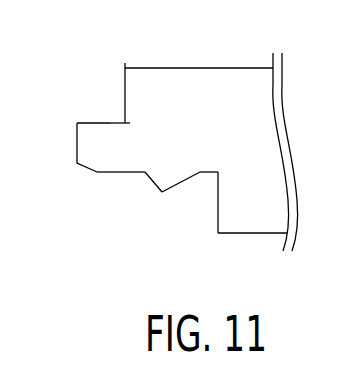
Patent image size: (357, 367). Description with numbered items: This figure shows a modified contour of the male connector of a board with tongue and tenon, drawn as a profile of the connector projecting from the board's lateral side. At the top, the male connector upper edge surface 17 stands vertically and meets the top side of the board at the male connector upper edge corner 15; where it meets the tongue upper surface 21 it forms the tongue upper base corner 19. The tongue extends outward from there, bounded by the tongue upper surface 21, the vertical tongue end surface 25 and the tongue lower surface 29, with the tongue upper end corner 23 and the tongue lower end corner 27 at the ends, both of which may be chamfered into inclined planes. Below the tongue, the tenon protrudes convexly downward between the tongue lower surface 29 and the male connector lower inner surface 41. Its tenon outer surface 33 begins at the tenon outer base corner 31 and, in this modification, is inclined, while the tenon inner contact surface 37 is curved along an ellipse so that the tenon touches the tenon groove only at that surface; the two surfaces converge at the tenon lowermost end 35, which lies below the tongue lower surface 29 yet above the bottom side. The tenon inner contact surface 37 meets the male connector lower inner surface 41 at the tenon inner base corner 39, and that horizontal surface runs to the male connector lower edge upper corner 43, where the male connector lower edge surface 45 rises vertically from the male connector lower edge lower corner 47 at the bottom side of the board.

The male connector upper edge corner 15 is at (125, 64).
The male connector upper edge surface 17 is at (128, 78).
The tongue upper base corner 19 is at (130, 123).
The tongue upper surface 21 is at (103, 122).
The tongue upper end corner 23 is at (77, 130).
The tongue end surface 25 is at (77, 148).
The tongue lower end corner 27 is at (87, 174).
The tongue lower surface 29 is at (115, 174).
The tenon outer base corner 31 is at (145, 171).
The tenon outer surface 33 is at (147, 187).
The tenon lowermost end 35 is at (162, 192).
The tenon inner contact surface 37 is at (193, 177).
The tenon inner base corner 39 is at (203, 173).
The male connector lower inner surface 41 is at (208, 172).
The male connector lower edge upper corner 43 is at (219, 172).
The male connector lower edge surface 45 is at (218, 202).
The male connector lower edge lower corner 47 is at (224, 233).